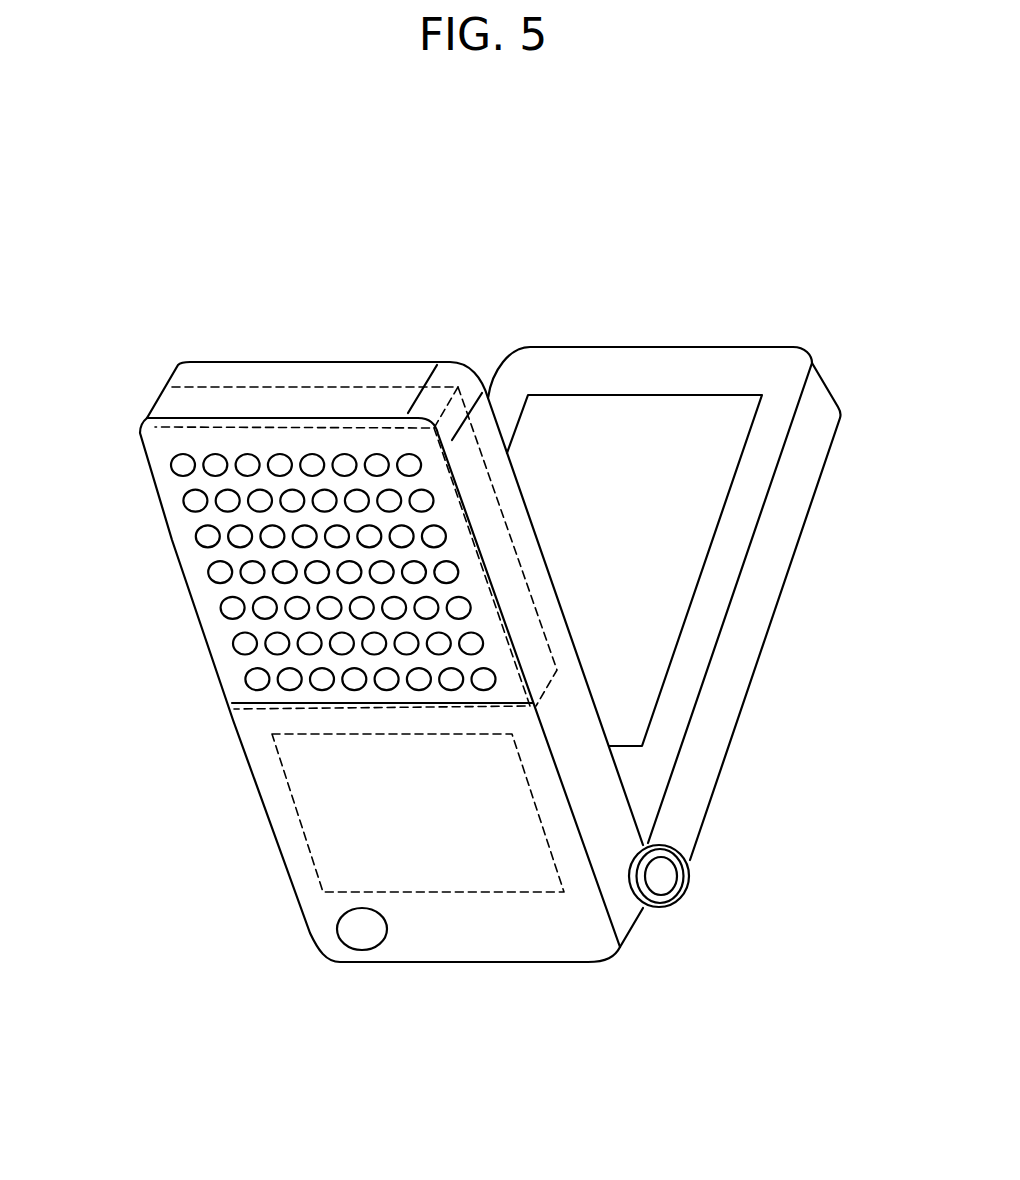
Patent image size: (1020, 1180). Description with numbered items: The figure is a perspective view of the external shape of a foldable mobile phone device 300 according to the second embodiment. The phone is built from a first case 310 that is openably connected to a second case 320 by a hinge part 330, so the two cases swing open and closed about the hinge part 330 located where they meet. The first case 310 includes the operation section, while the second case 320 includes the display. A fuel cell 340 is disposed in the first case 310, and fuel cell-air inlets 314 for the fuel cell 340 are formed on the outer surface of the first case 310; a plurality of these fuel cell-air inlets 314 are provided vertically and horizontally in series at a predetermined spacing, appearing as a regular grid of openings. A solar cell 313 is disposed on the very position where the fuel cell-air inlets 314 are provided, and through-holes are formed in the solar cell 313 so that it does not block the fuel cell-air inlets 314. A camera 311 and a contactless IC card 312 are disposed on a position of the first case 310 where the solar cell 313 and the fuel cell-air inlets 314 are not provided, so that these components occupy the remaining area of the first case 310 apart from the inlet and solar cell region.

The mobile phone device 300 is at (562, 188).
The first case 310 is at (587, 963).
The camera 311 is at (360, 935).
The contactless IC card 312 is at (307, 817).
The solar cell 313 is at (215, 642).
The fuel cell-air inlets 314 is at (176, 462).
The second case 320 is at (792, 562).
The hinge part 330 is at (692, 916).
The fuel cell 340 is at (499, 498).